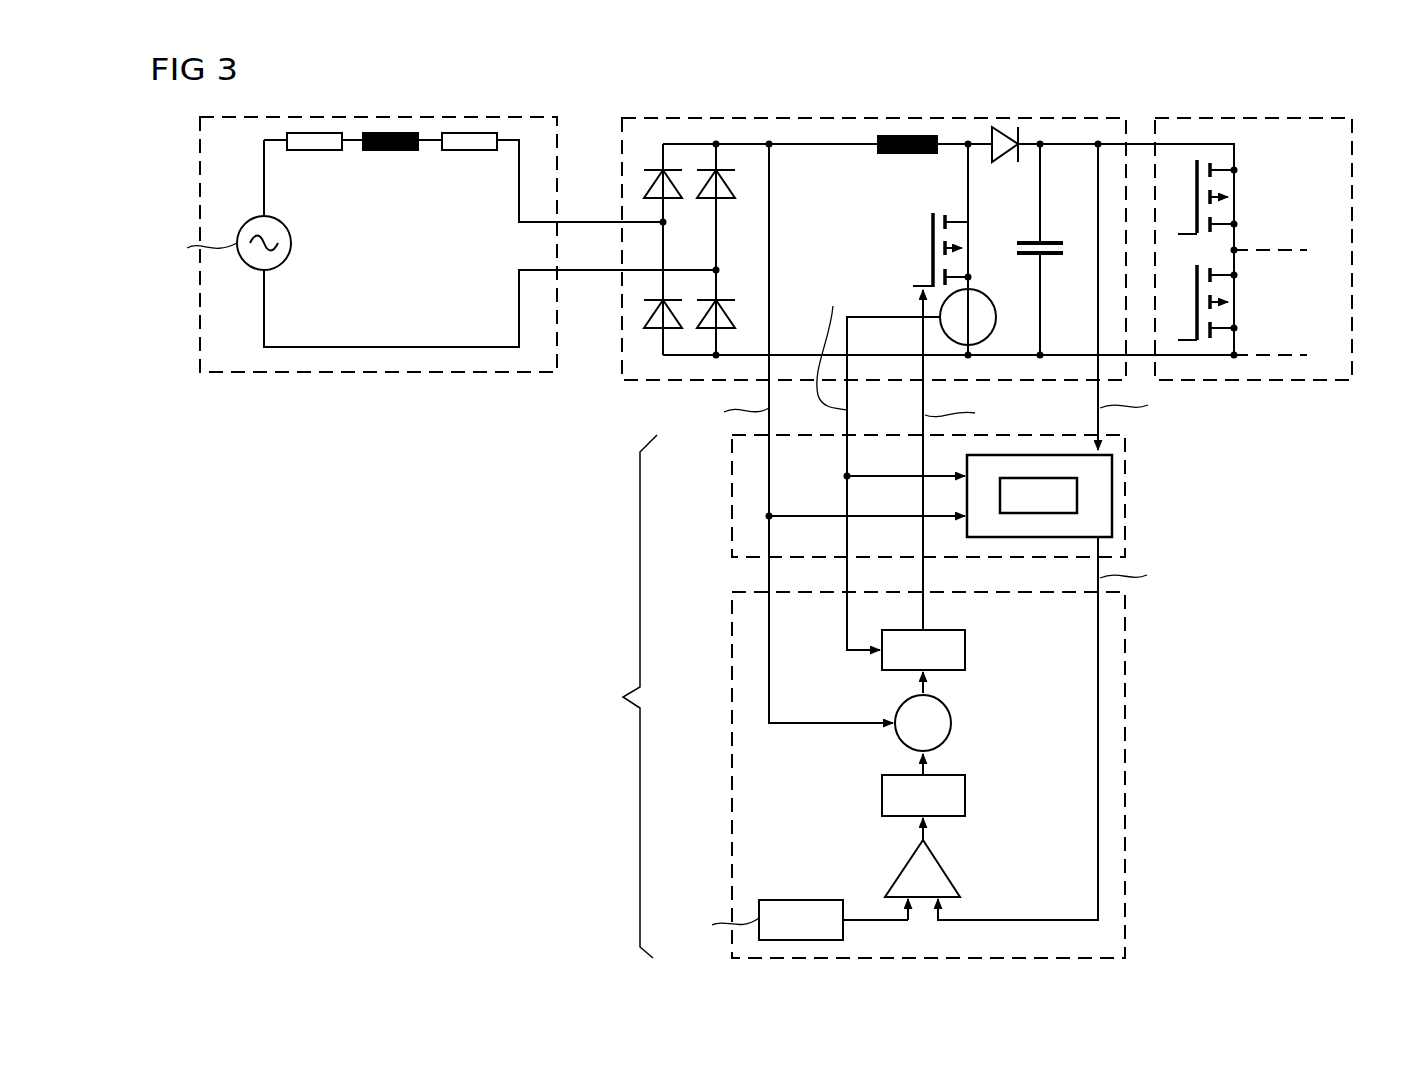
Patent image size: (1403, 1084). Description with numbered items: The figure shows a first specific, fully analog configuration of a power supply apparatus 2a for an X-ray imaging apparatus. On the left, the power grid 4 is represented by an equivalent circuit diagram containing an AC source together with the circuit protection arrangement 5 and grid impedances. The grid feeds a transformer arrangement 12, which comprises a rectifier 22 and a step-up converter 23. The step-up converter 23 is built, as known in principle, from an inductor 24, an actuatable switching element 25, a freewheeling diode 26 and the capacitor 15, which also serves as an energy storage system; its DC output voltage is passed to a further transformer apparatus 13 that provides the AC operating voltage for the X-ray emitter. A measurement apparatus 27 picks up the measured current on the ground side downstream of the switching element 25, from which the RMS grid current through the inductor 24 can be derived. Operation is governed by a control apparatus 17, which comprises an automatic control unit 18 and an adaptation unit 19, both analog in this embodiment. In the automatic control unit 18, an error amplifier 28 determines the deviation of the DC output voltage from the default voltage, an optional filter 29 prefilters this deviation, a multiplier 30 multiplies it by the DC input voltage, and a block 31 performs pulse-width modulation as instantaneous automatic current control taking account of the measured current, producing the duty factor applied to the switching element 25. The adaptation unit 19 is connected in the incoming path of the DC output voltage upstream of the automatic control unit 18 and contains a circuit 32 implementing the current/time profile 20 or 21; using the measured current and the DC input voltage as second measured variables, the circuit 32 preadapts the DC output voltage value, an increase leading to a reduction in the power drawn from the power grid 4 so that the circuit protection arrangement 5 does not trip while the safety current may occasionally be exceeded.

The power supply apparatus 2a is at (528, 614).
The power grid 4 is at (434, 261).
The circuit protection arrangement 5 is at (468, 133).
The transformer arrangement 12 is at (805, 118).
The further transformer apparatus 13 is at (1258, 118).
The capacitor 15 is at (1063, 250).
The control apparatus 17 is at (626, 696).
The automatic control unit 18 is at (910, 775).
The adaptation unit 19 is at (936, 496).
The current/time profile 20 is at (1115, 509).
The current/time profile 21 is at (1077, 495).
The rectifier 22 is at (692, 130).
The step-up converter 23 is at (878, 210).
The inductor 24 is at (910, 135).
The switching element 25 is at (916, 246).
The freewheeling diode 26 is at (1008, 122).
The measurement apparatus 27 is at (996, 314).
The error amplifier 28 is at (945, 865).
The filter 29 is at (965, 790).
The multiplier 30 is at (951, 720).
The block 31 is at (965, 648).
The circuit 32 is at (1099, 497).